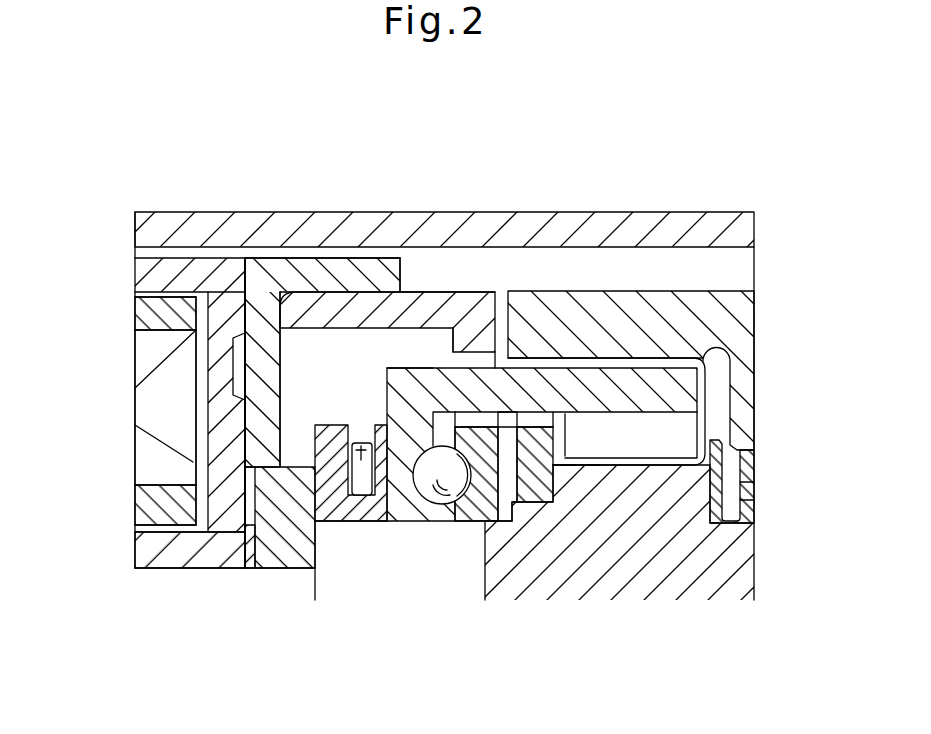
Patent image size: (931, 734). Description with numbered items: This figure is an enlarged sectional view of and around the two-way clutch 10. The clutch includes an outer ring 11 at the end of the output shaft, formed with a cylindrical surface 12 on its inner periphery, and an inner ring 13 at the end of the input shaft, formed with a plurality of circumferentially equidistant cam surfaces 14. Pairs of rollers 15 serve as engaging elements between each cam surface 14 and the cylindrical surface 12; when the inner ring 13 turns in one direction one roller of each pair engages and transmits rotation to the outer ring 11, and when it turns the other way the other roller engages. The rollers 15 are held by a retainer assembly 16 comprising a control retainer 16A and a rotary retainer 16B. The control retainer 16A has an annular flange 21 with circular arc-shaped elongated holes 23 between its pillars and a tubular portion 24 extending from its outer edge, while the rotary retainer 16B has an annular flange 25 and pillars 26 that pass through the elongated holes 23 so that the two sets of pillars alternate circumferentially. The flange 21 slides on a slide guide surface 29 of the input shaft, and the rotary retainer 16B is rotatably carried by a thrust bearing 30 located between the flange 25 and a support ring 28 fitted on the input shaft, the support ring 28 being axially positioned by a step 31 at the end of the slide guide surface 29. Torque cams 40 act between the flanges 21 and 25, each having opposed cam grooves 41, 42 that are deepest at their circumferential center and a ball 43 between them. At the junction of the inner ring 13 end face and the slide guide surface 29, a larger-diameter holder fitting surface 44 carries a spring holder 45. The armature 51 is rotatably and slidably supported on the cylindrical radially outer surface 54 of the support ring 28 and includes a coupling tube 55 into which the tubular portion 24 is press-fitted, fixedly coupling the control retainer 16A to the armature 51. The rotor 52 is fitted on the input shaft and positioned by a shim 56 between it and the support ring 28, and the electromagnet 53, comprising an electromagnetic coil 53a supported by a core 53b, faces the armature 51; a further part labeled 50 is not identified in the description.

The two-way clutch 10 is at (662, 287).
The outer ring 11 is at (625, 305).
The cylindrical surface 12 is at (584, 353).
The inner ring 13 is at (710, 474).
The cam surfaces 14 is at (677, 466).
The rollers 15 is at (705, 420).
The retainer assembly 16 is at (440, 289).
The control retainer 16A is at (472, 289).
The rotary retainer 16B is at (381, 364).
The annular flange 21 is at (505, 430).
The elongated holes 23 is at (473, 352).
The tubular portion 24 is at (409, 298).
The annular flange 25 is at (410, 521).
The pillars 26 is at (690, 383).
The support ring 28 is at (280, 548).
The slide guide surface 29 is at (372, 526).
The thrust bearing 30 is at (355, 425).
The step 31 is at (315, 586).
The torque cams 40 is at (442, 507).
The cam groove 41 is at (483, 525).
The cam groove 42 is at (428, 506).
The ball 43 is at (468, 506).
The holder fitting surface 44 is at (548, 500).
The spring holder 45 is at (553, 465).
The gap 50 is at (193, 250).
The armature 51 is at (262, 306).
The rotor 52 is at (228, 302).
The electromagnet 53 is at (133, 410).
The electromagnetic coil 53a is at (146, 357).
The core 53b is at (146, 313).
The cylindrical radially outer surface 54 is at (287, 463).
The coupling tube 55 is at (318, 276).
The shim 56 is at (252, 535).